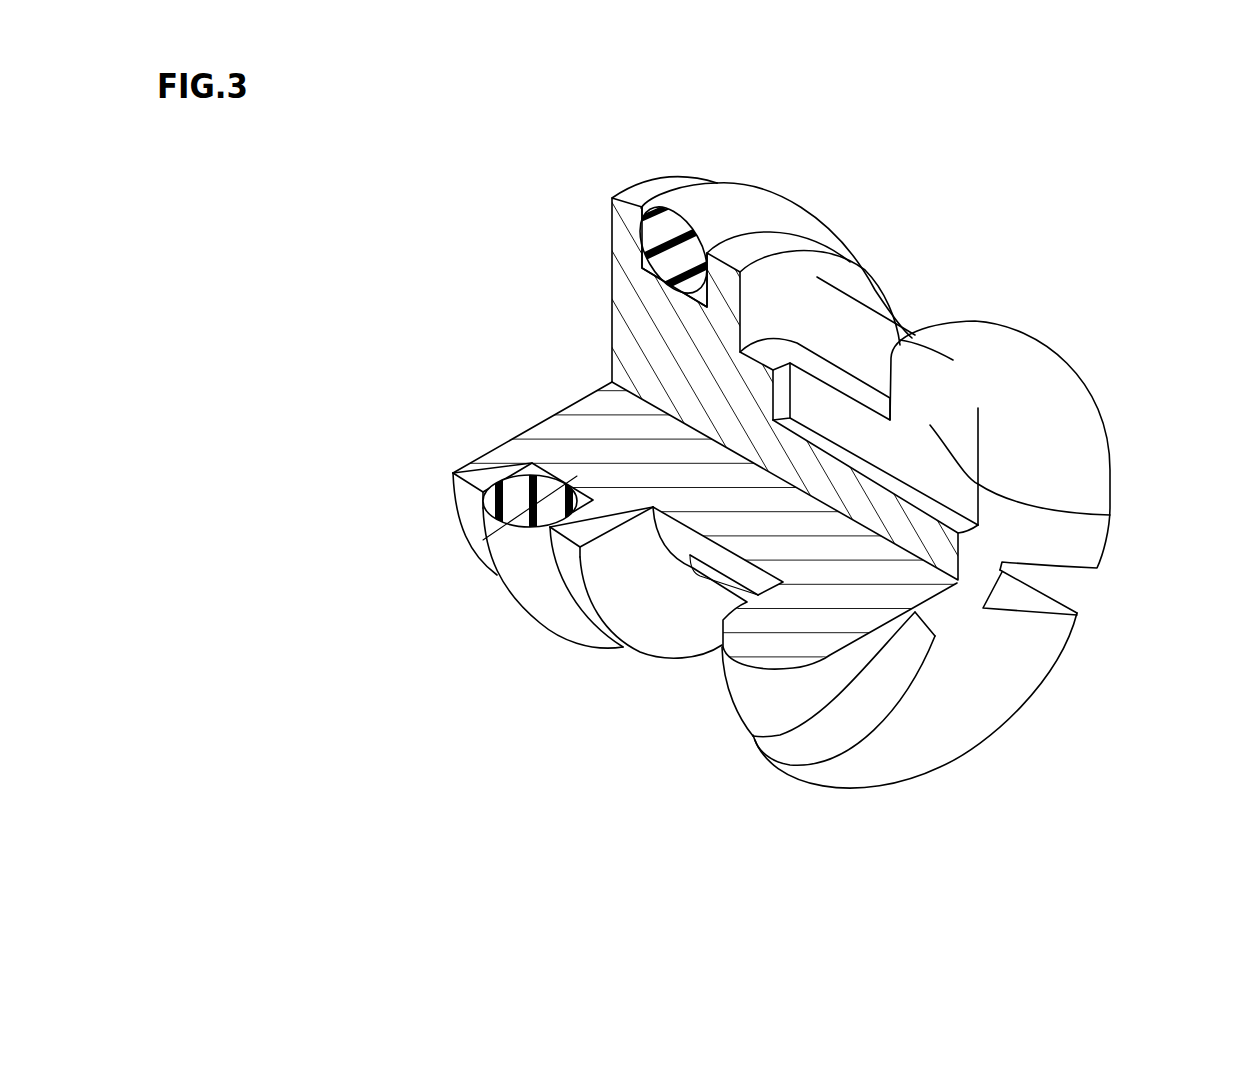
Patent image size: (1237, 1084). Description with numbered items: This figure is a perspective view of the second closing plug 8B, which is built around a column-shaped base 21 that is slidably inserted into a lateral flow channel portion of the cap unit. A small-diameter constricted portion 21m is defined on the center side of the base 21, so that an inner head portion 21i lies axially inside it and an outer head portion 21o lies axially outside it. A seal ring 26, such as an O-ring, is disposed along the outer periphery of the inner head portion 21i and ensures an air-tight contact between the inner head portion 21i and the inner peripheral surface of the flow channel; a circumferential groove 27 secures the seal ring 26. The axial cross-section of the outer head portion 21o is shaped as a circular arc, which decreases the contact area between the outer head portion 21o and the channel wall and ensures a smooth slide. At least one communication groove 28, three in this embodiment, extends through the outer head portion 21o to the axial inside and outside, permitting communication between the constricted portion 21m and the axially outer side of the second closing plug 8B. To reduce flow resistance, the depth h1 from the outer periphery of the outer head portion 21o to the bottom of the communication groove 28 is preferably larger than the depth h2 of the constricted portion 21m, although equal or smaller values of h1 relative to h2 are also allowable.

The second closing plug 8B is at (1028, 323).
The column-shaped base 21 is at (658, 698).
The inner head portion 21i is at (508, 638).
The constricted portion 21m is at (678, 594).
The outer head portion 21o is at (775, 782).
The seal ring 26 is at (517, 493).
The circumferential groove 27 is at (483, 540).
The communication groove 28 is at (1110, 515).
The depth from outer periphery of outer head portion to groove bottom of communicati h1 is at (823, 435).
The depth of constricted portion h2 is at (869, 309).